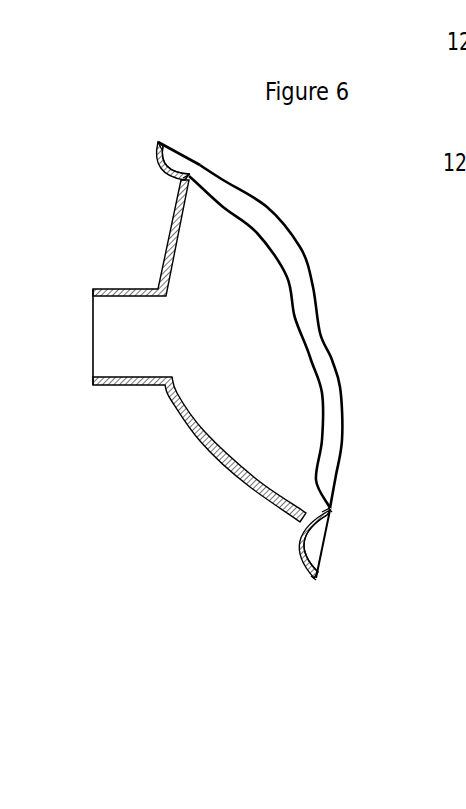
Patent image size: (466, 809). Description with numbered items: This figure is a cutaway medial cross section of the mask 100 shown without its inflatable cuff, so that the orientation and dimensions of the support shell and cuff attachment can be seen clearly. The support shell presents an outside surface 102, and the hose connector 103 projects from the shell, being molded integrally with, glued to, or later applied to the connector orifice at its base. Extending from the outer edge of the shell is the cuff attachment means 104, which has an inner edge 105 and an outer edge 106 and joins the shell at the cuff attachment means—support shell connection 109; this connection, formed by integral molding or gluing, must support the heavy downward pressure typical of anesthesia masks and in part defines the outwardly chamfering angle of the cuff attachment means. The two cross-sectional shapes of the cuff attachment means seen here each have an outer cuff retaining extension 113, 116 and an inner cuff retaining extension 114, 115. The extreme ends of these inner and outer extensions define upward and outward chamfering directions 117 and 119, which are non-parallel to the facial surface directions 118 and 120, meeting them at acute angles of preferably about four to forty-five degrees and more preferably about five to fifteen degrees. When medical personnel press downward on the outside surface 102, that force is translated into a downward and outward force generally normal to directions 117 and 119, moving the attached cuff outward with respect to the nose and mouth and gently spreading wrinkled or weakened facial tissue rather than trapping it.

The mask 100 is at (195, 495).
The outside surface 102 is at (160, 250).
The hose connector 103 is at (140, 385).
The cuff attachment means 104 is at (298, 285).
The inner edge 105 is at (212, 163).
The outer edge 106 is at (158, 142).
The cuff attachment means—support shell connection 109 is at (313, 385).
The outer cuff retaining extension 113 is at (160, 160).
The inner cuff retaining extension 114 is at (178, 180).
The inner cuff retaining extension 115 is at (327, 505).
The outer cuff retaining extension 116 is at (300, 545).
The upward and outward chamfering direction 117 is at (170, 150).
The facial surface direction 118 is at (200, 163).
The upward and outward chamfering direction 119 is at (313, 582).
The facial surface direction 120 is at (331, 513).